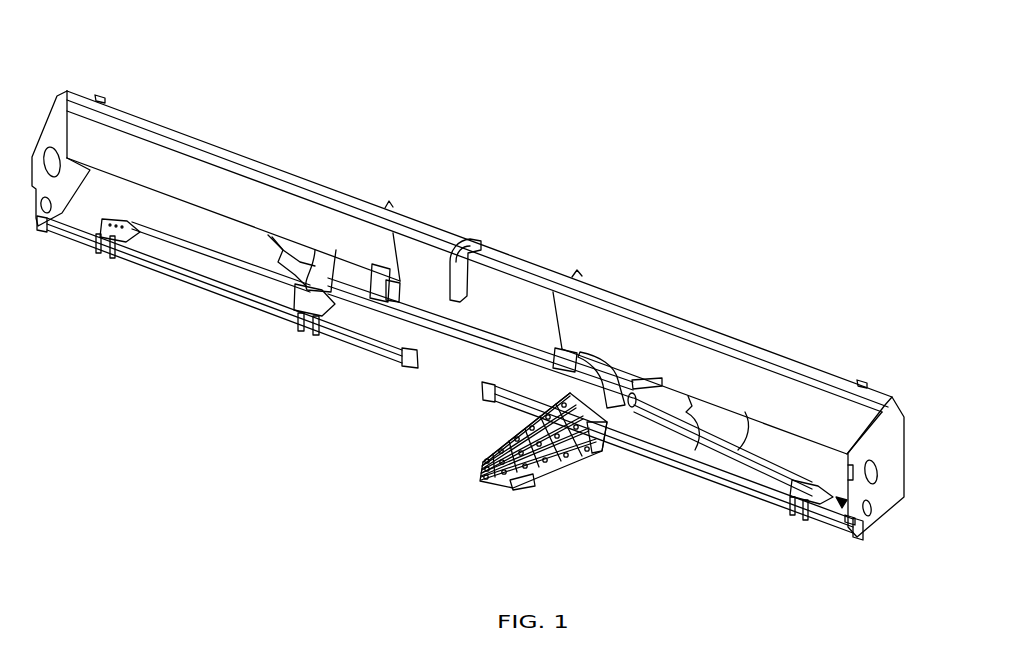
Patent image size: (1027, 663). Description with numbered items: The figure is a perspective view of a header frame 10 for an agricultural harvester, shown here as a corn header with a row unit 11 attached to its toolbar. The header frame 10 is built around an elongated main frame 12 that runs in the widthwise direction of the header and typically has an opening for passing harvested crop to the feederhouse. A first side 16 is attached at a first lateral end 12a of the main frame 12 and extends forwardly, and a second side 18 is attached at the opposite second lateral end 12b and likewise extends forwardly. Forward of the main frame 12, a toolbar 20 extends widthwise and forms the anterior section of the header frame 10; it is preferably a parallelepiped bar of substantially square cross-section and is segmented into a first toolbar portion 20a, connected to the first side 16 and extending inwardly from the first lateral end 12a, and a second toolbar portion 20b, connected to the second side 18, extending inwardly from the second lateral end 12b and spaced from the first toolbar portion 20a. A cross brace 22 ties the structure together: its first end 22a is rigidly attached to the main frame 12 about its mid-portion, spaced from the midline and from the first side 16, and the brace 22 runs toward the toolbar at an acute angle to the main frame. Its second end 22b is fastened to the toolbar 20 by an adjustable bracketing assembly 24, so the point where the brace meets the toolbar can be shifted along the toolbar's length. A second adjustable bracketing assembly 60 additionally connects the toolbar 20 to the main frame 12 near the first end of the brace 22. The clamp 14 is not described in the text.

The header frame 10 is at (663, 179).
The row unit 11 is at (474, 482).
The main frame 12 is at (433, 217).
The first lateral end 12a is at (876, 356).
The second lateral end 12b is at (107, 88).
The clamp 14 is at (403, 258).
The first side 16 is at (893, 433).
The second side 18 is at (44, 128).
The toolbar 20 is at (694, 473).
The first toolbar portion 20a is at (737, 488).
The second toolbar portion 20b is at (193, 286).
The brace 22 is at (772, 457).
The first end 22a is at (652, 438).
The second end 22b is at (812, 480).
The adjustable bracketing assembly 24 is at (847, 523).
The second adjustable bracketing assembly 60 is at (627, 421).